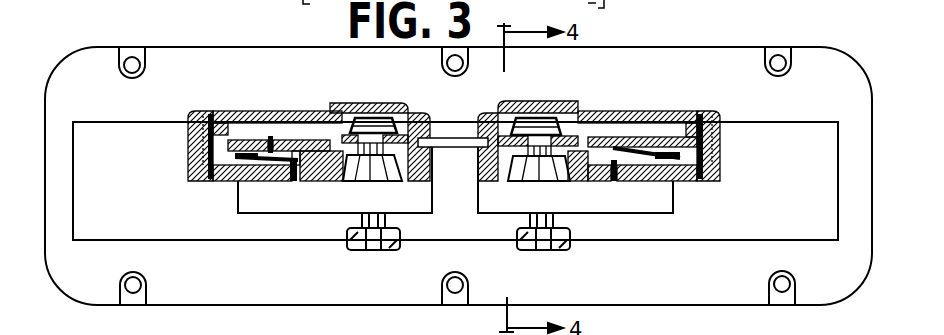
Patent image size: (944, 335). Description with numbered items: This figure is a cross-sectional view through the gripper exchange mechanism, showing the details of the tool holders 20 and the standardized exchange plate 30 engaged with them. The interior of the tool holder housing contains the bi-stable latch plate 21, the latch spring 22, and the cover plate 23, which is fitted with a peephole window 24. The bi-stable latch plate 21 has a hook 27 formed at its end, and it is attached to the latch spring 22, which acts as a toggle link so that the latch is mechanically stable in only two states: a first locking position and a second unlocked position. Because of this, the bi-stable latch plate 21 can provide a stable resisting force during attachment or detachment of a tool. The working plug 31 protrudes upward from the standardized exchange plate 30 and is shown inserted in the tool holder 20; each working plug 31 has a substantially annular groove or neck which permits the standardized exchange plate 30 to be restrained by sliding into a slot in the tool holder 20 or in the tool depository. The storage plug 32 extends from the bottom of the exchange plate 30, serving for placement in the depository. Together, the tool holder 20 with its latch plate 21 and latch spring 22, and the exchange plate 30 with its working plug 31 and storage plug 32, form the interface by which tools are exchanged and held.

The tool holder 20 is at (218, 183).
The bi-stable latch plate 21 is at (234, 142).
The latch spring 22 is at (243, 142).
The cover plate 23 is at (279, 112).
The peephole window 24 is at (388, 102).
The hook 27 is at (441, 138).
The standardized exchange plate 30 is at (276, 198).
The working plug 31 is at (347, 183).
The storage plug 32 is at (350, 243).